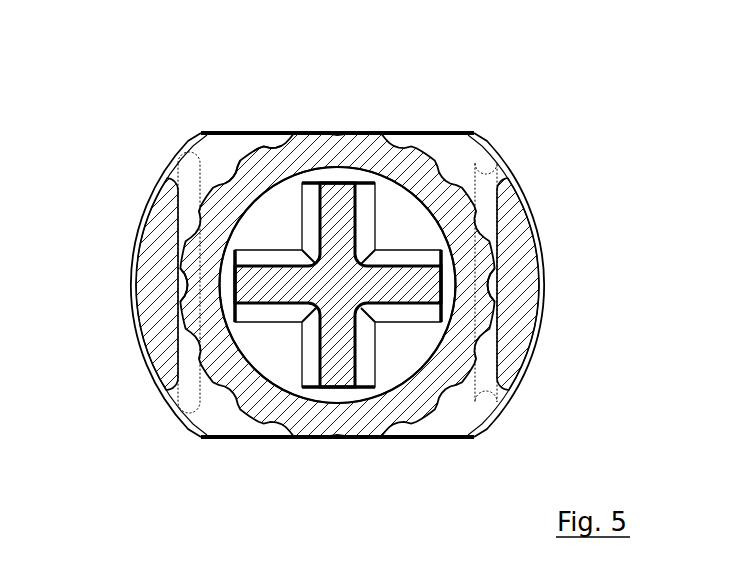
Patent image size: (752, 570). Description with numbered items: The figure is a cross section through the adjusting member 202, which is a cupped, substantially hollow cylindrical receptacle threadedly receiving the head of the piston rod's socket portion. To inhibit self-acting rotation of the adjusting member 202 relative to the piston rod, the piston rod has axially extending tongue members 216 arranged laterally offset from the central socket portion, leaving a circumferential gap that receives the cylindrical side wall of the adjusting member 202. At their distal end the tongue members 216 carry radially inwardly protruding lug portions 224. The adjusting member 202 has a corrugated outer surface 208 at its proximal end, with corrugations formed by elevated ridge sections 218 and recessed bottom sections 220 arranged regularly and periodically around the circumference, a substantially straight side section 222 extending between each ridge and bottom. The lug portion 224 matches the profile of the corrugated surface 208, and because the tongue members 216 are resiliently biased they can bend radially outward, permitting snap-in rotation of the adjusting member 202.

The adjusting member 202 is at (308, 434).
The corrugated outer surface 208 is at (412, 424).
The tongue members 216 is at (148, 243).
The ridge sections 218 is at (190, 153).
The bottom sections 220 is at (232, 171).
The side section 222 is at (265, 149).
The lug portion 224 is at (184, 285).